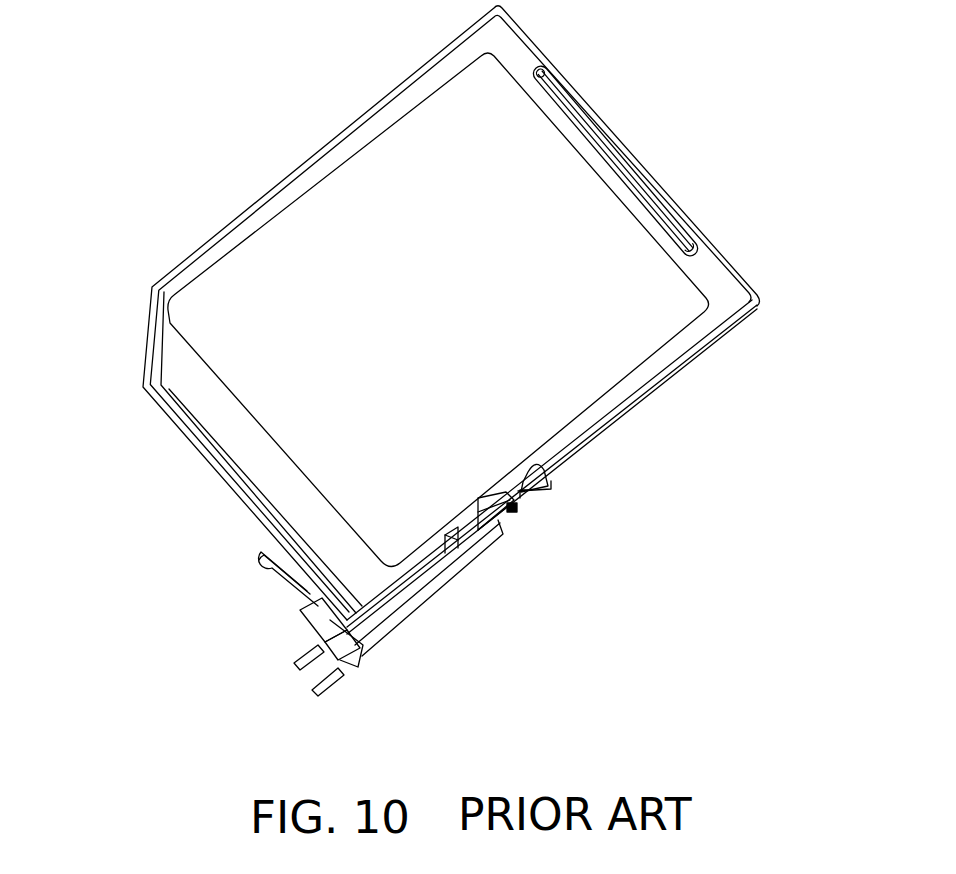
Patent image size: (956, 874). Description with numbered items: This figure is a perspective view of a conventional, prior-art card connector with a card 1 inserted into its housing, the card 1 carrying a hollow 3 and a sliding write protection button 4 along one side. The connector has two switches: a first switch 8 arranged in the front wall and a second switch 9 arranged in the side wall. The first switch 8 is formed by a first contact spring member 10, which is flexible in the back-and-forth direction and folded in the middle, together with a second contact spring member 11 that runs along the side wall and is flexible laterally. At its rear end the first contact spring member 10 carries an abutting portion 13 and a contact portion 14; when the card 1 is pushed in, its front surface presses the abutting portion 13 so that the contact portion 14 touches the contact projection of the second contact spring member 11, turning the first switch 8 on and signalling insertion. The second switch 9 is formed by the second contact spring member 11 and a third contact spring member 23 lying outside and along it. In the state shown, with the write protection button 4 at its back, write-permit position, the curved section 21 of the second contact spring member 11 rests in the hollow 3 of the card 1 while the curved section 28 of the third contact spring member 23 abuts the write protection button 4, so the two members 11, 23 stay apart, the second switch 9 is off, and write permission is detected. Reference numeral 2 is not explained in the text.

The card 1 is at (563, 187).
The side wall 2 is at (678, 373).
The hollow 3 is at (450, 584).
The write protection button 4 is at (532, 458).
The first switch 8 is at (282, 652).
The second switch 9 is at (495, 573).
The first contact spring member 10 is at (262, 585).
The second contact spring member 11 is at (428, 568).
The abutting portion 13 is at (342, 607).
The contact portion 14 is at (297, 663).
The curved section 21 is at (470, 501).
The third contact spring member 23 is at (507, 543).
The curved section 28 is at (525, 503).